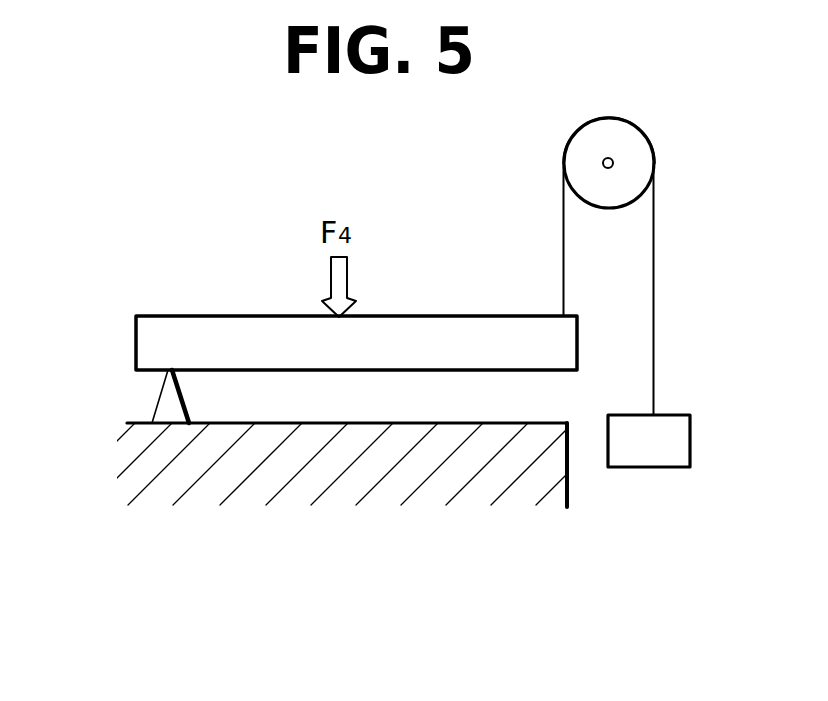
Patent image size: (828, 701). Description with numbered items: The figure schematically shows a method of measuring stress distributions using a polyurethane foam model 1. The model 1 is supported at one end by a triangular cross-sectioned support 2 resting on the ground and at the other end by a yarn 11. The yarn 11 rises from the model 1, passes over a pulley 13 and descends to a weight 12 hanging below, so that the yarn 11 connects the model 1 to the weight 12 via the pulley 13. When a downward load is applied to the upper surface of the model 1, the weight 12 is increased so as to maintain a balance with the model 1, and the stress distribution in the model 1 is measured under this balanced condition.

The model 1 is at (430, 334).
The triangular cross-sectioned support 2 is at (157, 402).
The yarn 11 is at (563, 217).
The weight 12 is at (658, 437).
The pulley 13 is at (632, 152).